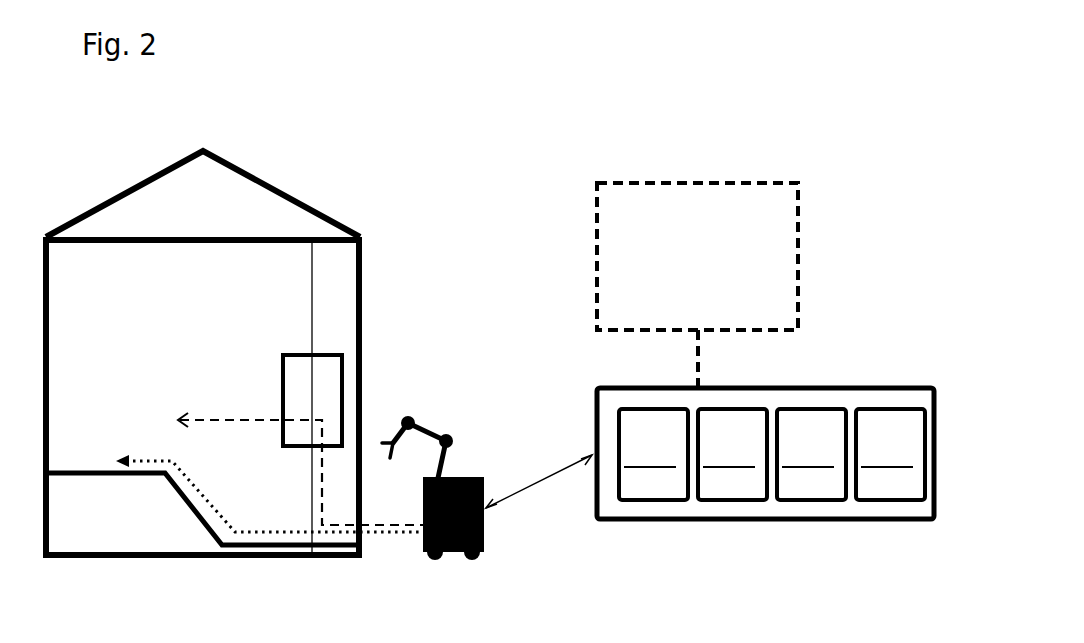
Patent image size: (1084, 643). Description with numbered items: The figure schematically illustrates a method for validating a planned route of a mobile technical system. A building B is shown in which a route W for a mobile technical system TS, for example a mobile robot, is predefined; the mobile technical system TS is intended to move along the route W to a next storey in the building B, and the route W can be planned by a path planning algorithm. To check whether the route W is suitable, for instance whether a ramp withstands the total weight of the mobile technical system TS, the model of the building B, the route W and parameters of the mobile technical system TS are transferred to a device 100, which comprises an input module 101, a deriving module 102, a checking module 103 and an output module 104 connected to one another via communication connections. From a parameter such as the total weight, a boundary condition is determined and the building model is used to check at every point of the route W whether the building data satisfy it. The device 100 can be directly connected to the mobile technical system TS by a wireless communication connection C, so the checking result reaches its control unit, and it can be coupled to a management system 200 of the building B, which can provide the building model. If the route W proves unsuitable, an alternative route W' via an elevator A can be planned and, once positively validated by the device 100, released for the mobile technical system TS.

The building B is at (307, 208).
The elevator A is at (327, 353).
The alternative route W' is at (300, 443).
The route W is at (269, 489).
The mobile technical system TS is at (462, 477).
The wireless communication connection C is at (517, 488).
The management system 200 is at (720, 183).
The device 100 is at (860, 387).
The input module 101 is at (653, 454).
The deriving module 102 is at (732, 454).
The checking module 103 is at (811, 454).
The output module 104 is at (890, 454).